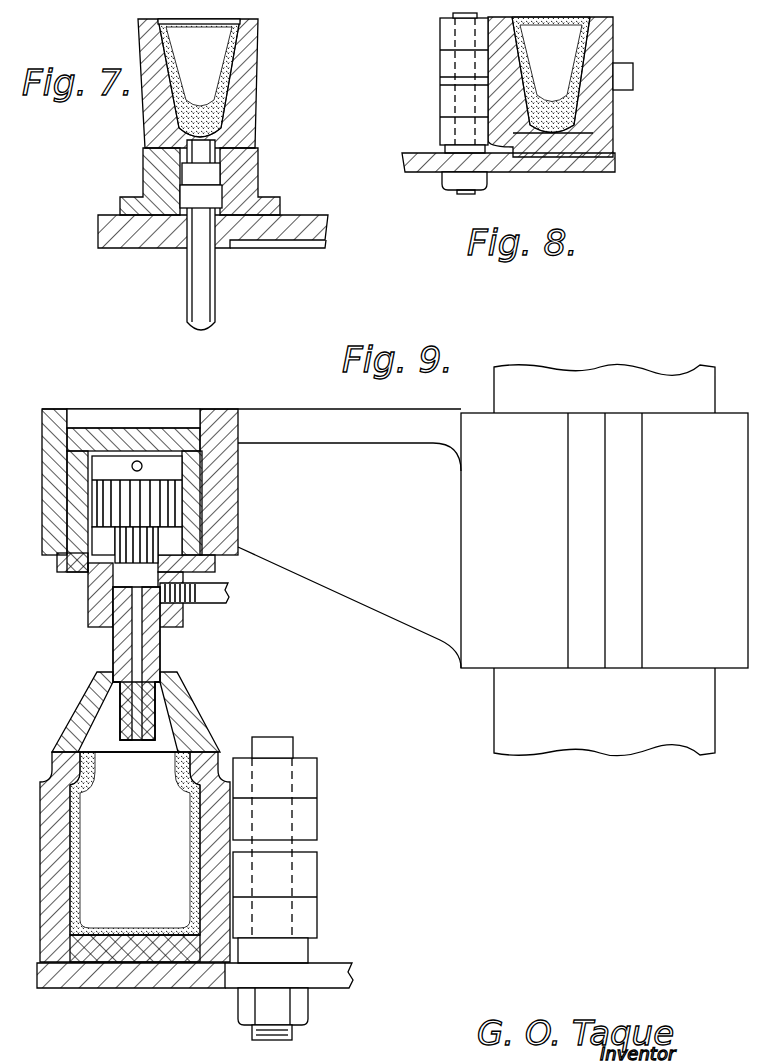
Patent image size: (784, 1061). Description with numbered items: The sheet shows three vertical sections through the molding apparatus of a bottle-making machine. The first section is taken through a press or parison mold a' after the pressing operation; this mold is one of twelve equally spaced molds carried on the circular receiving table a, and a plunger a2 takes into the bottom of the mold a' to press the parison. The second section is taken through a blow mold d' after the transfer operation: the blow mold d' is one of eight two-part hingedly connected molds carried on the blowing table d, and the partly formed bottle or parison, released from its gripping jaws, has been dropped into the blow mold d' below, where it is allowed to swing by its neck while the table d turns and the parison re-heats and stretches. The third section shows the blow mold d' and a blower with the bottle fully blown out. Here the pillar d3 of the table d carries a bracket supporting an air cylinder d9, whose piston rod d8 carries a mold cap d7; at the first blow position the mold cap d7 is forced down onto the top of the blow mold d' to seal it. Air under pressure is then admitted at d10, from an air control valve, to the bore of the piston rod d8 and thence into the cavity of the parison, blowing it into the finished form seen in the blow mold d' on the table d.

In FIG. 7, the receiving table a is at (213, 196).
In FIG. 7, the press or parison mold a' is at (226, 83).
In FIG. 7, the plunger a2 is at (205, 282).
In FIG. 8, the blowing table d is at (495, 153).
In FIG. 9, the blowing table d is at (201, 970).
In FIG. 8, the blow mold d' is at (505, 85).
In FIG. 9, the blow mold d' is at (199, 850).
In FIG. 9, the pillar d3 is at (560, 383).
In FIG. 9, the mold cap d7 is at (198, 716).
In FIG. 9, the piston rod d8 is at (145, 662).
In FIG. 9, the air cylinder d9 is at (185, 513).
In FIG. 9, the air admission point d10 is at (183, 610).